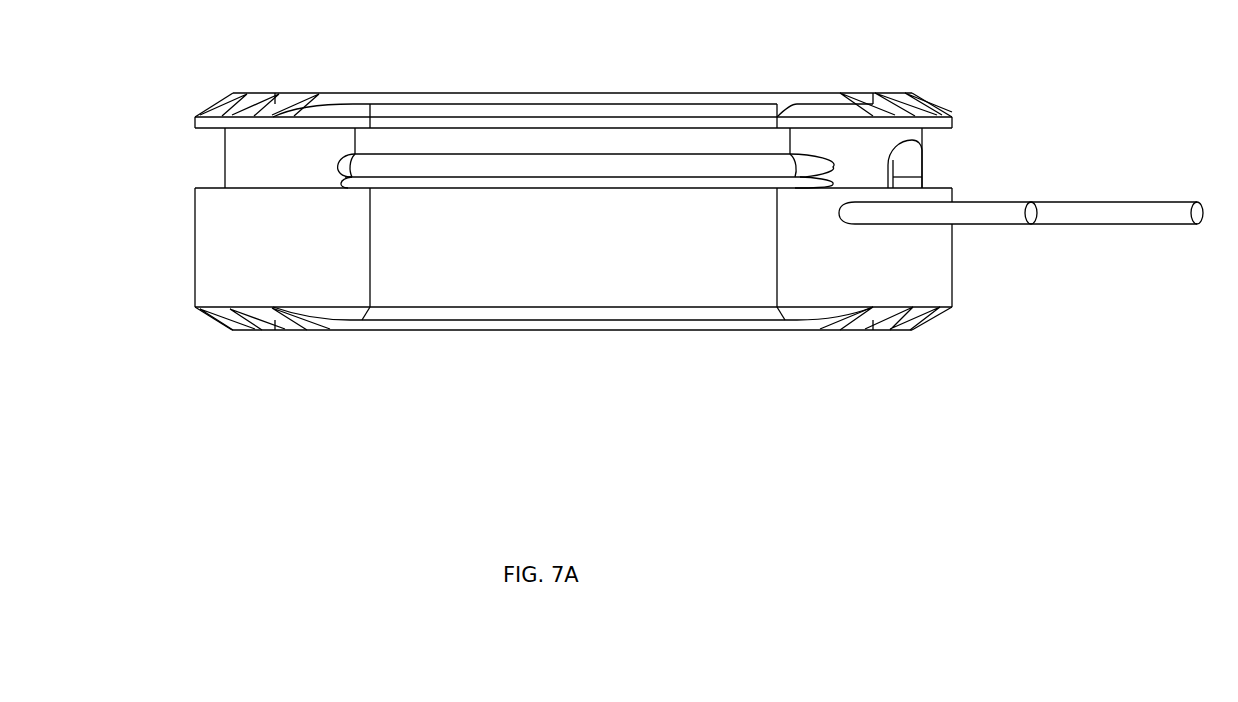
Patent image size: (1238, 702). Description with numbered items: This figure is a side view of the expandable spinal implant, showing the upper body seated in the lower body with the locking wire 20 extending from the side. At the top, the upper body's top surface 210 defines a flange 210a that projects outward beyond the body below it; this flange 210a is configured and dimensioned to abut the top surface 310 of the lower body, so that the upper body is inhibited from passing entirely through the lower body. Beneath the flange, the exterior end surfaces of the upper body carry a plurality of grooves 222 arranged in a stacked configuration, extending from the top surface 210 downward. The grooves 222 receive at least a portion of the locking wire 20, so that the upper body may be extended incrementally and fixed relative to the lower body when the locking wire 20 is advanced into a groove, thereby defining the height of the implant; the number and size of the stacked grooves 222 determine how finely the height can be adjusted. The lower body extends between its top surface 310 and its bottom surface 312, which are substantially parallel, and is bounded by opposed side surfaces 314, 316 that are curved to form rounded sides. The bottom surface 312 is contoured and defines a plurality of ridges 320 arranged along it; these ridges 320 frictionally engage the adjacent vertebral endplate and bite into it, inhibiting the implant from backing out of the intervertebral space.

The locking wire 20 is at (1037, 210).
The top surface 210 is at (554, 90).
The flange 210a is at (1017, 100).
The grooves 222 is at (586, 120).
The top surface 310 is at (481, 158).
The bottom surface 312 is at (546, 362).
The side surface 314 is at (1012, 243).
The side surface 316 is at (153, 270).
The ridges 320 is at (516, 335).